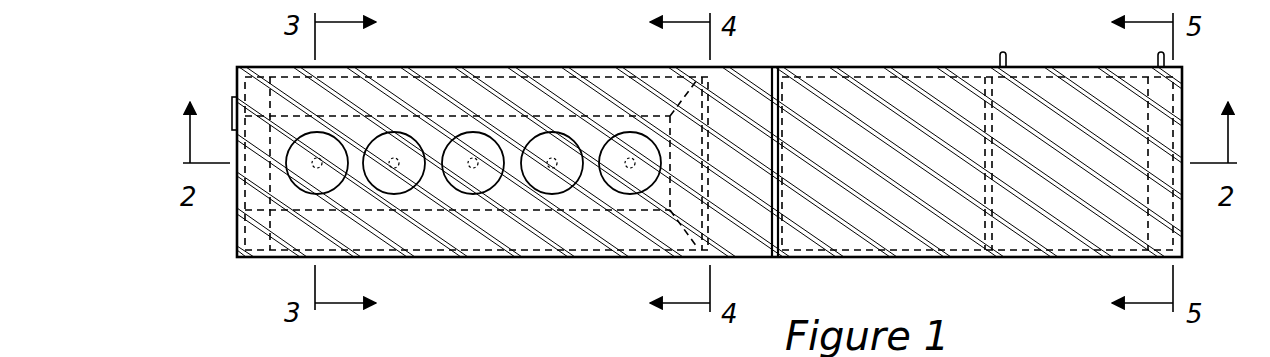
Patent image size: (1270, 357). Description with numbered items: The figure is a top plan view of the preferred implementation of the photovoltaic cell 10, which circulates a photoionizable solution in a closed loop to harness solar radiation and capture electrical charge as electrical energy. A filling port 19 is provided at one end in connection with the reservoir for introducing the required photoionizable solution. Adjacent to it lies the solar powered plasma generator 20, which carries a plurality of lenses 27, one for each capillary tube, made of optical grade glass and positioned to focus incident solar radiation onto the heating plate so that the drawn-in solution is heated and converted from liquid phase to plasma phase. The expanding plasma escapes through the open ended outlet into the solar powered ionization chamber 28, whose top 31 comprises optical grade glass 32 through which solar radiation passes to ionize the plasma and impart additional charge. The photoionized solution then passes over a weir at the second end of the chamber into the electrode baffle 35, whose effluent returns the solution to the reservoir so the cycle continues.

The photovoltaic cell 10 is at (226, 36).
The filling port 19 is at (231, 107).
The solar powered plasma generator 20 is at (530, 99).
The lenses 27 is at (403, 141).
The solar powered ionization chamber 28 is at (912, 145).
The top of the solar powered ionization chamber 31 is at (920, 226).
The optical grade glass 32 is at (850, 102).
The electrode baffle 35 is at (1058, 209).